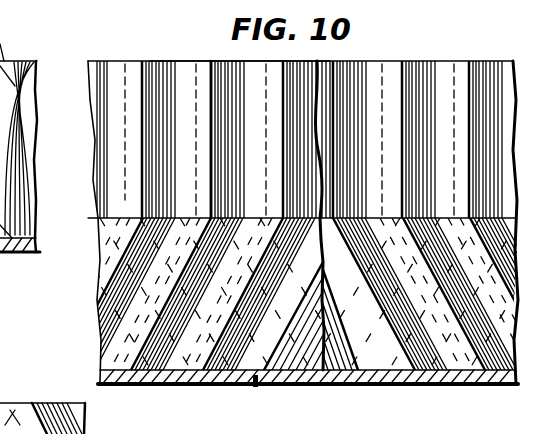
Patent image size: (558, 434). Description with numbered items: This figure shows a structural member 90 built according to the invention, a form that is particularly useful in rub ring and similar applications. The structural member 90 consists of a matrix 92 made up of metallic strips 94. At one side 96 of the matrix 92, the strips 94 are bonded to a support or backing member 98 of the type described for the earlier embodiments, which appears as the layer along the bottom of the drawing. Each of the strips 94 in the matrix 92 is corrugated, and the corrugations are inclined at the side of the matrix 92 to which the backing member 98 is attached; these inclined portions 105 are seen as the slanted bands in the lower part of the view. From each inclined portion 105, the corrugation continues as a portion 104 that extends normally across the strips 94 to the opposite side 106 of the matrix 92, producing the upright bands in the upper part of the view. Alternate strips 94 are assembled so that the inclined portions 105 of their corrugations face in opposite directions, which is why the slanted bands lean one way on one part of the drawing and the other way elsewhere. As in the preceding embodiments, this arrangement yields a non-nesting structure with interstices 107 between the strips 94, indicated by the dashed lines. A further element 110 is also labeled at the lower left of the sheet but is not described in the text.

The structural member 90 is at (88, 320).
The matrix 92 is at (215, 56).
The metallic strips 94 is at (135, 61).
The side of the matrix 96 is at (255, 388).
The support or backing member 98 is at (188, 384).
The portion of corrugation extending normally across the strips 104 is at (417, 68).
The inclined portion of corrugation 105 is at (188, 298).
The opposite side of the matrix 106 is at (174, 58).
The interstices 107 is at (97, 207).
The adjacent block 110 is at (48, 403).